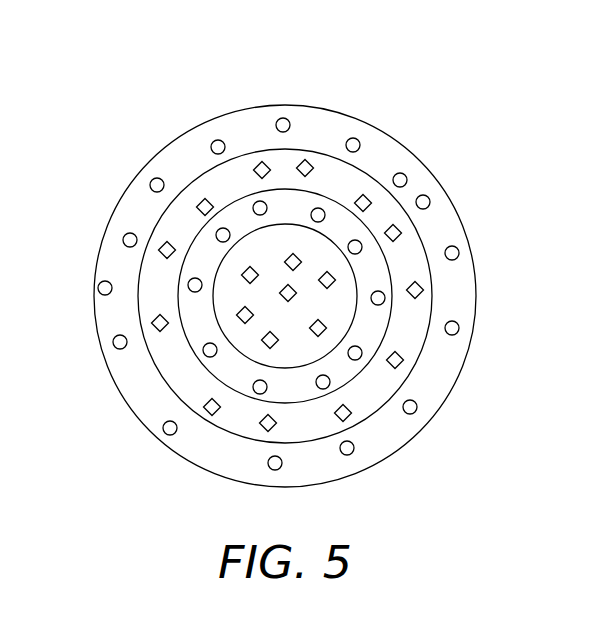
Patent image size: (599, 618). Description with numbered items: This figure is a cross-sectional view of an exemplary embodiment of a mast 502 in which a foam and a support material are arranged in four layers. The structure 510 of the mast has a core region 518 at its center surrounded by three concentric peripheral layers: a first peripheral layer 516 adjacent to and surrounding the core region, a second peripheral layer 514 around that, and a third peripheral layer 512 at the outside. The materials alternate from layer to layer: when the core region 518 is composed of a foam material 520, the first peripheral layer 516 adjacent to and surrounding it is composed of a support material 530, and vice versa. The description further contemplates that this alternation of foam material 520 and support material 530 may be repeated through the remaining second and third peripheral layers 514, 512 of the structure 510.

The mast 502 is at (428, 73).
The structure 510 is at (140, 176).
The third peripheral layer 512 is at (372, 148).
The second peripheral layer 514 is at (325, 175).
The first peripheral layer 516 is at (190, 310).
The core region 518 is at (248, 338).
The foam material 520 is at (457, 249).
The support material 530 is at (424, 291).